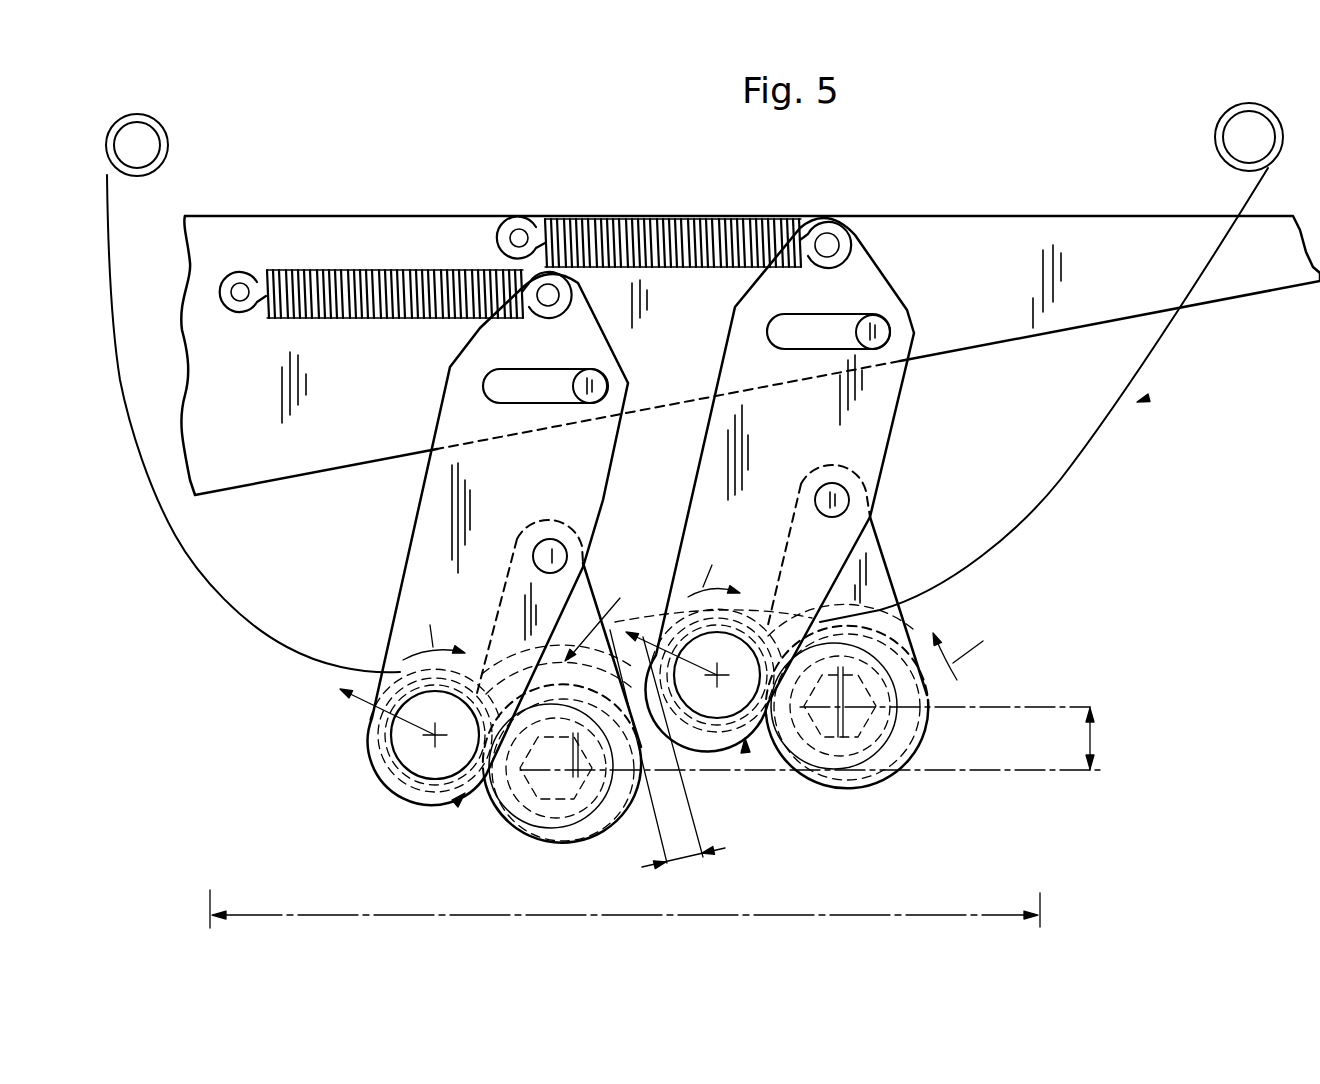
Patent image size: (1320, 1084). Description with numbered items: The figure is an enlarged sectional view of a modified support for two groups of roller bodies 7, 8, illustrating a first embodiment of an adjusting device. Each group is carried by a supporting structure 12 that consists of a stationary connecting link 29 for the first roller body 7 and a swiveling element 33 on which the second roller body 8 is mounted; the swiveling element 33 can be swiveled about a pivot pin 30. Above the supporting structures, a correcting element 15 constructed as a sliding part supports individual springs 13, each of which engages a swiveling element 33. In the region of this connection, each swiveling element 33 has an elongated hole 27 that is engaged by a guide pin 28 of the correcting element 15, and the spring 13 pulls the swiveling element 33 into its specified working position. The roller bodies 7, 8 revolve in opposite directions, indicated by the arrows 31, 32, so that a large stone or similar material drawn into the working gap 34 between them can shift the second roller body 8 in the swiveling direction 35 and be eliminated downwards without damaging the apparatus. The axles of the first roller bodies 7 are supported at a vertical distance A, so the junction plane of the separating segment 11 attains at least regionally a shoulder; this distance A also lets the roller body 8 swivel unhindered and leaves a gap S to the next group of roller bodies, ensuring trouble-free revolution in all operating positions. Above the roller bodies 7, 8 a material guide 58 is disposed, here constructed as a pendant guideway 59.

The first roller body 7 is at (542, 850).
The second roller body 8 is at (395, 766).
The separating segment 11 is at (850, 914).
The supporting structure 12 is at (412, 514).
The spring 13 is at (361, 268).
The correcting element 15 is at (257, 235).
The elongated hole 27 is at (505, 366).
The guide pin 28 is at (605, 377).
The stationary connecting link 29 is at (584, 597).
The pivot pin 30 is at (556, 546).
The arrow 31 is at (790, 626).
The arrow 32 is at (571, 592).
The swiveling element 33 is at (515, 500).
The working gap 34 is at (456, 800).
The swiveling direction 35 is at (350, 692).
The material guide 58 is at (1146, 398).
The pendant guideway 59 is at (1082, 456).
The gap S is at (667, 769).
The distance A is at (1098, 740).